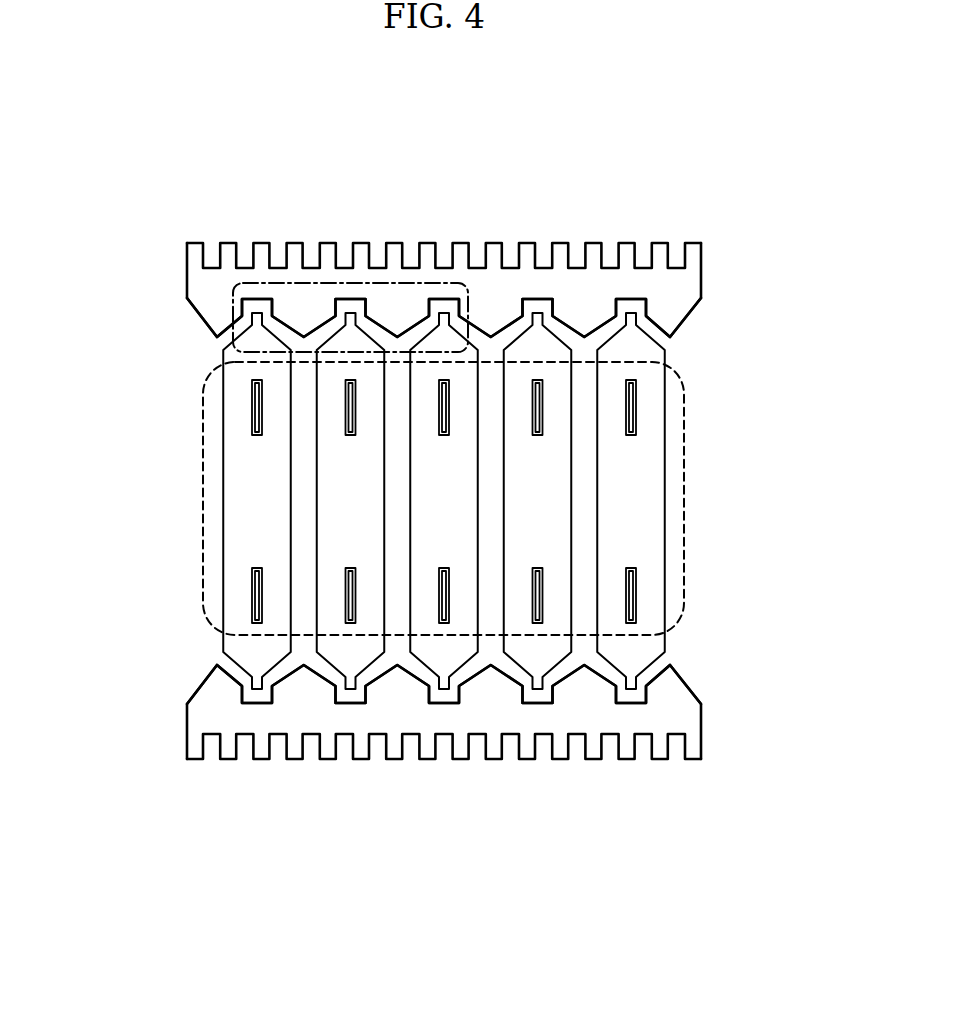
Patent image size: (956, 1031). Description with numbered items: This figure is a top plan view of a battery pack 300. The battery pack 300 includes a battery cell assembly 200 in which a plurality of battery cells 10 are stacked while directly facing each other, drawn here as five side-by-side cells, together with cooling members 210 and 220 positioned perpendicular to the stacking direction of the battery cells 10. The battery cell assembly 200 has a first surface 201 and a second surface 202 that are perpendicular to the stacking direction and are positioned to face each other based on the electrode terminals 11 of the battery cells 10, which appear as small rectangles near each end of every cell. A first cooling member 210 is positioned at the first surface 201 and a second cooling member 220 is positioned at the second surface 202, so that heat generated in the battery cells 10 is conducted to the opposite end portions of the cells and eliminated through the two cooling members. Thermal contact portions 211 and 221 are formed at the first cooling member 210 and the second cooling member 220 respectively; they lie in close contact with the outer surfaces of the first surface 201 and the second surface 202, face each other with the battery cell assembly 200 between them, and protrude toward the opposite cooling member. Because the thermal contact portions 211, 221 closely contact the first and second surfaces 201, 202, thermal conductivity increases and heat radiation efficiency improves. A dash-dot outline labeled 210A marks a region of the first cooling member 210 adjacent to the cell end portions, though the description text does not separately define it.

The battery pack 300 is at (145, 227).
The battery cell assembly 200 is at (203, 493).
The battery cell 10 is at (258, 548).
The electrode terminal 11 is at (637, 595).
The first surface 201 is at (700, 334).
The second surface 202 is at (700, 668).
The first cooling member 210 is at (172, 303).
The connection portion of first wiring board 210A is at (237, 337).
The thermal contact portion 211 is at (667, 320).
The second cooling member 220 is at (171, 723).
The thermal contact portion 221 is at (220, 690).